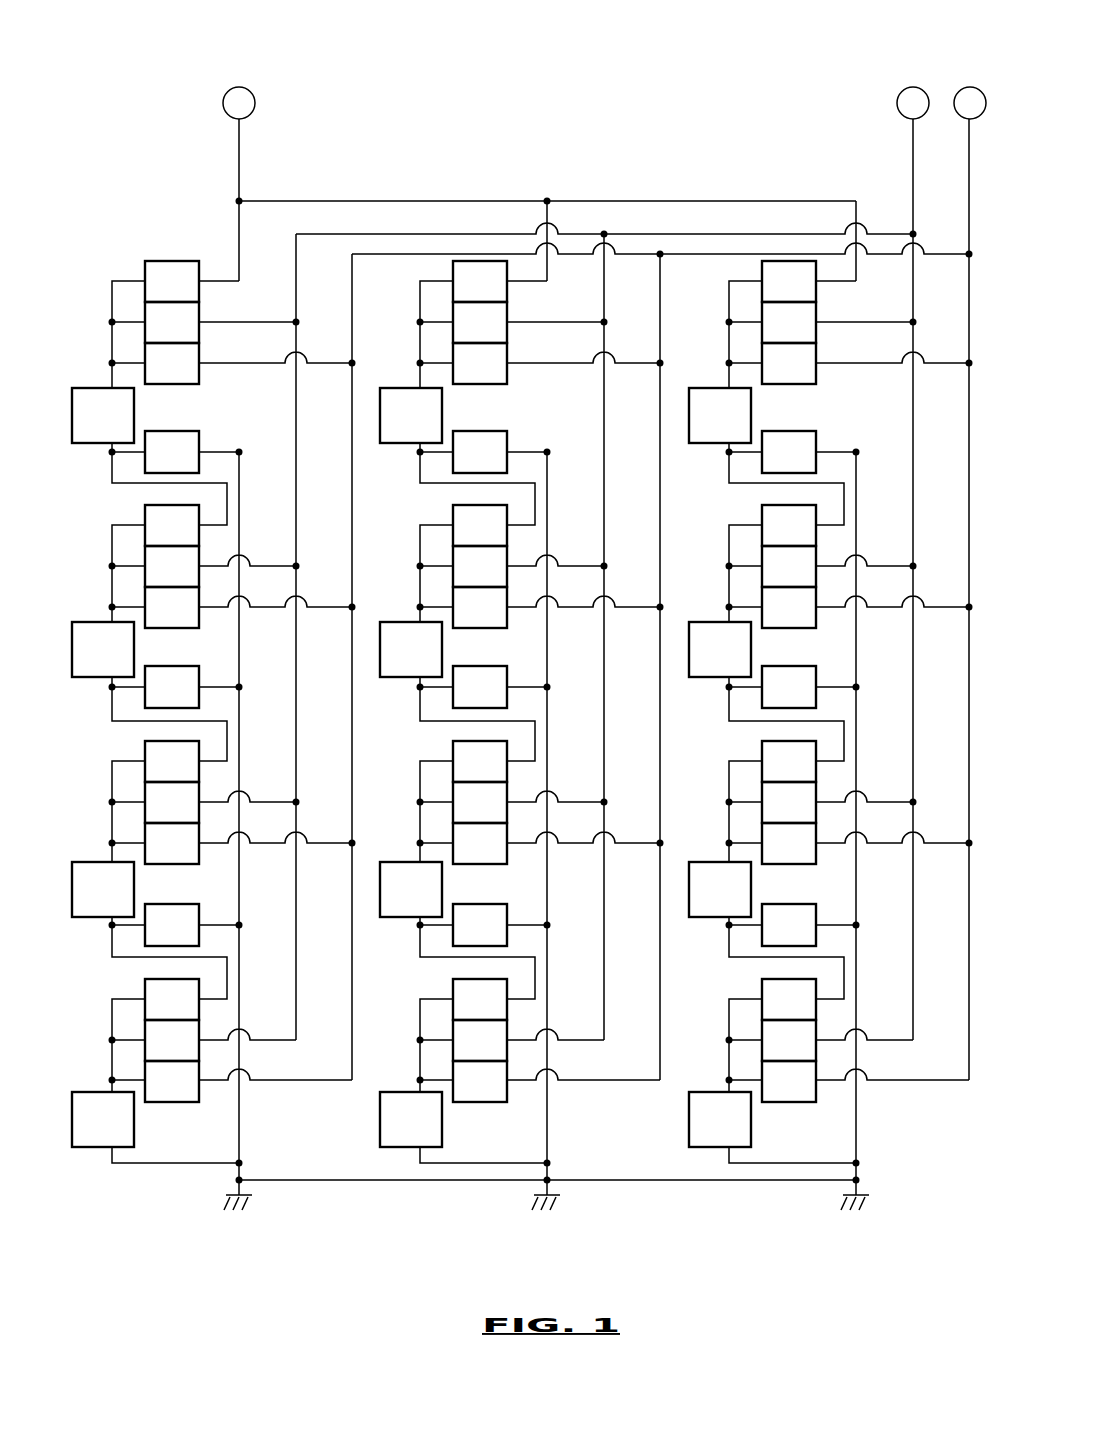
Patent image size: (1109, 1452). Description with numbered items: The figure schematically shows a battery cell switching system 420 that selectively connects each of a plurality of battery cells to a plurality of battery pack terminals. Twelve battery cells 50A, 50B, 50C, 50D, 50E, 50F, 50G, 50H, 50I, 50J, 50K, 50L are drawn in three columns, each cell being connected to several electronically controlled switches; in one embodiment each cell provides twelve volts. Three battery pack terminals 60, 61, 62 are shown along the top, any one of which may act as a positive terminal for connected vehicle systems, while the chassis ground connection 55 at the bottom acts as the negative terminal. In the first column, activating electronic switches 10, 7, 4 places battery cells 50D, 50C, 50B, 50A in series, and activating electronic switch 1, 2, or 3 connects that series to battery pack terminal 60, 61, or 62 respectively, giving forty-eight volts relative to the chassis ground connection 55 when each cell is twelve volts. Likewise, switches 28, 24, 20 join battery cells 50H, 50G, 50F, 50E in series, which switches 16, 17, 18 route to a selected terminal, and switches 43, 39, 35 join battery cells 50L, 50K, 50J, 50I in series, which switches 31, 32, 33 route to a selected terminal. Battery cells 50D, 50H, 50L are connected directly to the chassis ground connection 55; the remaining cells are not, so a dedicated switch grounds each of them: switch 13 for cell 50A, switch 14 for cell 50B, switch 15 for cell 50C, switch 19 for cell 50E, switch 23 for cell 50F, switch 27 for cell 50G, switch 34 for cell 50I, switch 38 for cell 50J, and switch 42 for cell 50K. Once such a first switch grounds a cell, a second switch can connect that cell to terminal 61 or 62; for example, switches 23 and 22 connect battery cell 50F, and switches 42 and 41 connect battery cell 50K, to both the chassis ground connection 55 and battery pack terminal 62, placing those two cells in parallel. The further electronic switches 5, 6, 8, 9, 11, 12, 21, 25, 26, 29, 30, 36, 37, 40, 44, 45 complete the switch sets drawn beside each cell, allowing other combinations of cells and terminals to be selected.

The battery cell switching system 420 is at (107, 113).
The battery pack terminal 60 is at (240, 87).
The battery pack terminal 61 is at (908, 87).
The battery pack terminal 62 is at (965, 87).
The chassis ground connection 55 is at (907, 1237).
The electronic switch 1 is at (172, 281).
The electronic switch 2 is at (172, 322).
The electronic switch 3 is at (172, 363).
The electronic switch 4 is at (172, 525).
The electronic switch 5 is at (172, 566).
The electronic switch 6 is at (172, 607).
The electronic switch 7 is at (172, 761).
The electronic switch 8 is at (172, 802).
The electronic switch 9 is at (172, 843).
The electronic switch 10 is at (172, 999).
The electronic switch 11 is at (172, 1040).
The electronic switch 12 is at (172, 1081).
The electronic switch 13 is at (172, 452).
The electronic switch 14 is at (172, 687).
The electronic switch 15 is at (172, 925).
The electronic switch 16 is at (480, 281).
The electronic switch 17 is at (480, 322).
The electronic switch 18 is at (480, 363).
The electronic switch 19 is at (480, 452).
The electronic switch 20 is at (480, 525).
The electronic switch 21 is at (480, 566).
The electronic switch 22 is at (480, 607).
The electronic switch 23 is at (480, 687).
The electronic switch 24 is at (480, 761).
The electronic switch 25 is at (480, 802).
The electronic switch 26 is at (480, 843).
The electronic switch 27 is at (480, 925).
The electronic switch 28 is at (480, 999).
The electronic switch 29 is at (480, 1040).
The electronic switch 30 is at (480, 1081).
The electronic switch 31 is at (789, 281).
The electronic switch 32 is at (789, 322).
The electronic switch 33 is at (789, 363).
The electronic switch 34 is at (789, 452).
The electronic switch 35 is at (789, 525).
The electronic switch 36 is at (789, 566).
The electronic switch 37 is at (789, 607).
The electronic switch 38 is at (789, 687).
The electronic switch 39 is at (789, 761).
The electronic switch 40 is at (789, 802).
The electronic switch 41 is at (789, 843).
The electronic switch 42 is at (789, 925).
The electronic switch 43 is at (789, 999).
The electronic switch 44 is at (789, 1040).
The electronic switch 45 is at (789, 1081).
The battery cell 50A is at (103, 415).
The battery cell 50B is at (103, 649).
The battery cell 50C is at (103, 889).
The battery cell 50D is at (103, 1119).
The battery cell 50E is at (411, 415).
The battery cell 50F is at (411, 649).
The battery cell 50G is at (411, 889).
The battery cell 50H is at (411, 1119).
The battery cell 50I is at (720, 415).
The battery cell 50J is at (720, 649).
The battery cell 50K is at (720, 889).
The battery cell 50L is at (720, 1119).